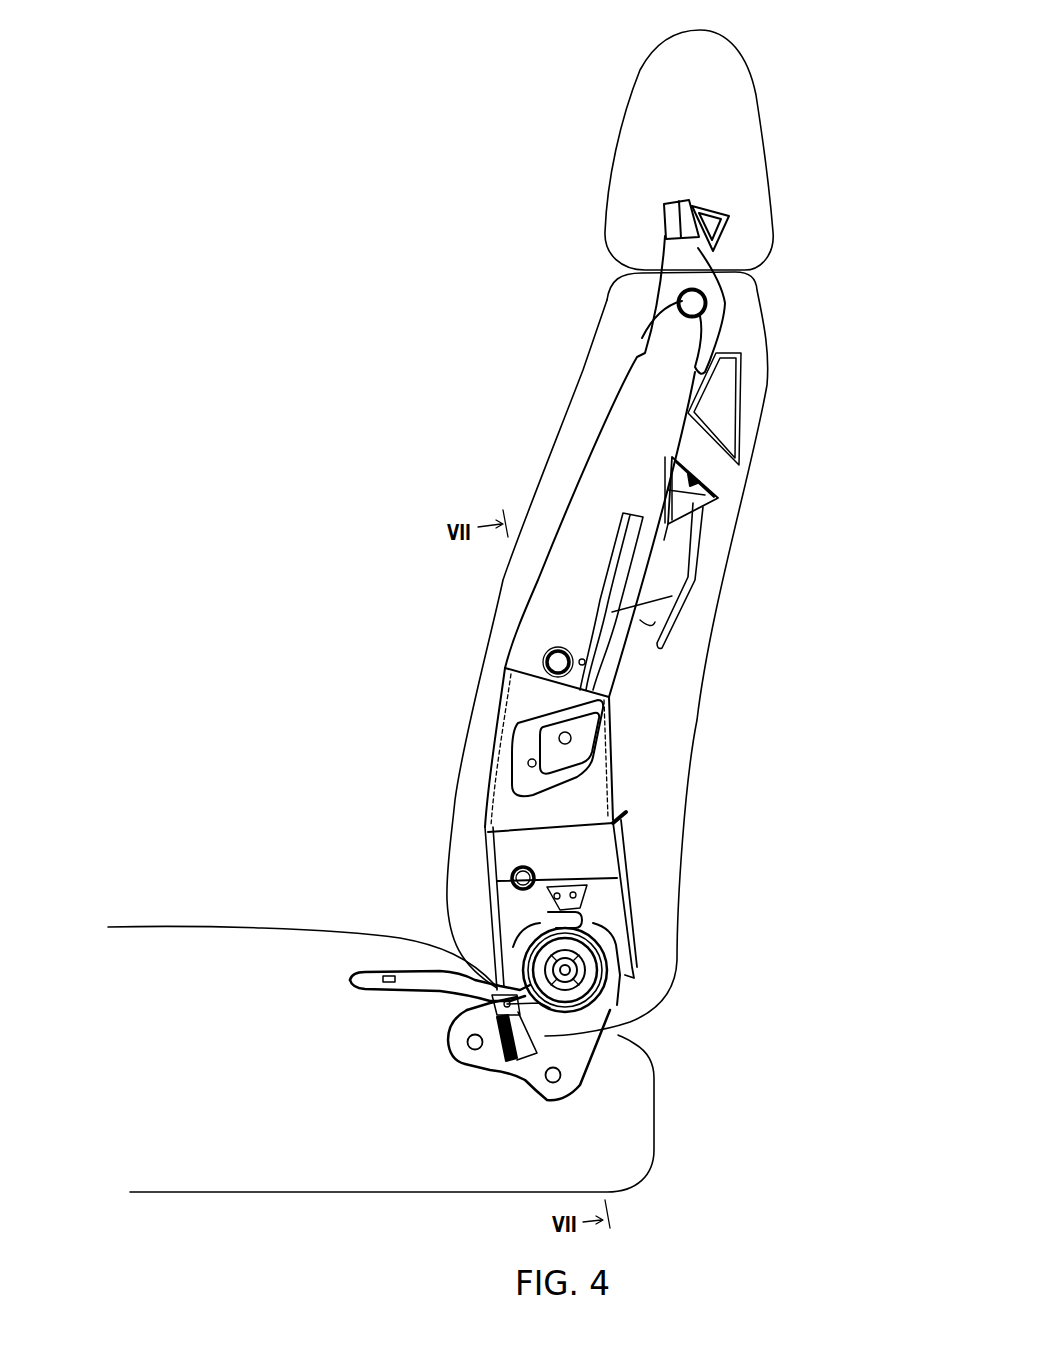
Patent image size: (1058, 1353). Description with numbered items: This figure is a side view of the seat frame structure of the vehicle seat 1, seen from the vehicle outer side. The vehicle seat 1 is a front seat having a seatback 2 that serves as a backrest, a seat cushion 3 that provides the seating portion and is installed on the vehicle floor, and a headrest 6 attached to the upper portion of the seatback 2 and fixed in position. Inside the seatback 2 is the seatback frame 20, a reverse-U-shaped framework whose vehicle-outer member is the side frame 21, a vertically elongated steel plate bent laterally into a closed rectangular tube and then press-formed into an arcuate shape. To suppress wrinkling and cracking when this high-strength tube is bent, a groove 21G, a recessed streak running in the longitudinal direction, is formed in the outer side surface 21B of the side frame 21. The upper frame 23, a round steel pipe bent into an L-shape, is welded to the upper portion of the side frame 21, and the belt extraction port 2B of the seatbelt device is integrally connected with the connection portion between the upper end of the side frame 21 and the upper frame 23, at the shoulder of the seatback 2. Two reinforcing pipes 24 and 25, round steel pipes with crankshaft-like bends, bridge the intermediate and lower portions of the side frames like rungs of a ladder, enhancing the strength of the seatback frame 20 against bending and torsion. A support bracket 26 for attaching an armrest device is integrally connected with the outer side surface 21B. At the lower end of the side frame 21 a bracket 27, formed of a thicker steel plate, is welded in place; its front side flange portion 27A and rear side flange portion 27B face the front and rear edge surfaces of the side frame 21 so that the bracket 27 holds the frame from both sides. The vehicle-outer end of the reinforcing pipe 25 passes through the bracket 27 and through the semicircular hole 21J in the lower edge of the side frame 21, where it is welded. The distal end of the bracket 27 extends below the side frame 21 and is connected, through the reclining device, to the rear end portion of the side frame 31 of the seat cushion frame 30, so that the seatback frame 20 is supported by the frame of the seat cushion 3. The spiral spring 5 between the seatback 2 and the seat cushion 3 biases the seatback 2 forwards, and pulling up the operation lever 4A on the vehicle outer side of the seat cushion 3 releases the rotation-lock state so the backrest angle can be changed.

The vehicle seat 1 is at (366, 222).
The seatback 2 is at (594, 373).
The seatback frame 20 is at (594, 551).
The belt extraction port 2B is at (676, 212).
The seat cushion 3 is at (166, 936).
The operation lever 4A is at (410, 977).
The spiral spring 5 is at (598, 940).
The headrest 6 is at (730, 73).
The side frame 21 is at (590, 473).
The outer side surface 21B is at (630, 443).
The groove 21G is at (623, 563).
The semicircular hole 21J is at (557, 877).
The upper frame 23 is at (697, 303).
The reinforcing pipe 24 is at (547, 653).
The reinforcing pipe 25 is at (512, 870).
The support bracket 26 is at (590, 730).
The bracket 27 is at (470, 841).
The front side flange portion 27A is at (512, 878).
The rear side flange portion 27B is at (618, 843).
The seat cushion frame 30 is at (544, 991).
The side frame 31 is at (577, 1052).